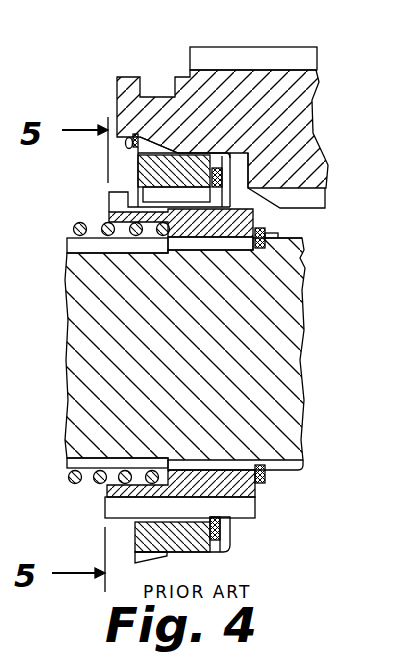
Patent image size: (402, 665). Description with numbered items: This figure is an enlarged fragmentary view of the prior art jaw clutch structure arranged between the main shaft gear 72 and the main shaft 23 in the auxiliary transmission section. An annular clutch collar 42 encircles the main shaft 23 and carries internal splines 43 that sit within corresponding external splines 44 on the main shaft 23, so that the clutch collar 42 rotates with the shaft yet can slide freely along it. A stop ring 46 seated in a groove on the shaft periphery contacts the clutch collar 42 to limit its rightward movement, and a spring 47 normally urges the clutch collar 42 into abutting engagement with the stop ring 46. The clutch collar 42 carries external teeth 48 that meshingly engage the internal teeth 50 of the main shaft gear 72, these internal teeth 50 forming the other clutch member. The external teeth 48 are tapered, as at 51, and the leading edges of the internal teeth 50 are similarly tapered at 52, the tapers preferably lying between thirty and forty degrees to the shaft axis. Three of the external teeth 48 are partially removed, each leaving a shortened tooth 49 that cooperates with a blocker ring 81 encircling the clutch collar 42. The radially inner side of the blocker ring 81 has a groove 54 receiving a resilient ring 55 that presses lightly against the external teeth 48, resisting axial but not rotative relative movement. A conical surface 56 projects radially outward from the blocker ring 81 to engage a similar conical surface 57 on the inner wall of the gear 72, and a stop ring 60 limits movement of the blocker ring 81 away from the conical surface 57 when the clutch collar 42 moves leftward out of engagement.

The main shaft 23 is at (80, 358).
The clutch collar 42 is at (109, 215).
The internal splines 43 is at (197, 244).
The external splines 44 is at (300, 245).
The stop ring 46 is at (277, 239).
The spring 47 is at (74, 229).
The external teeth 48 is at (95, 509).
The shortened tooth 49 is at (109, 193).
The internal teeth 50 is at (318, 195).
The tapered surface 51 is at (232, 503).
The tapered surface 52 is at (268, 205).
The groove 54 is at (216, 167).
The resilient ring 55 is at (250, 170).
The conical surface 56 is at (157, 128).
The conical surface 57 is at (128, 138).
The stop ring 60 is at (127, 149).
The main shaft gear 72 is at (305, 43).
The blocker ring 81 is at (177, 152).